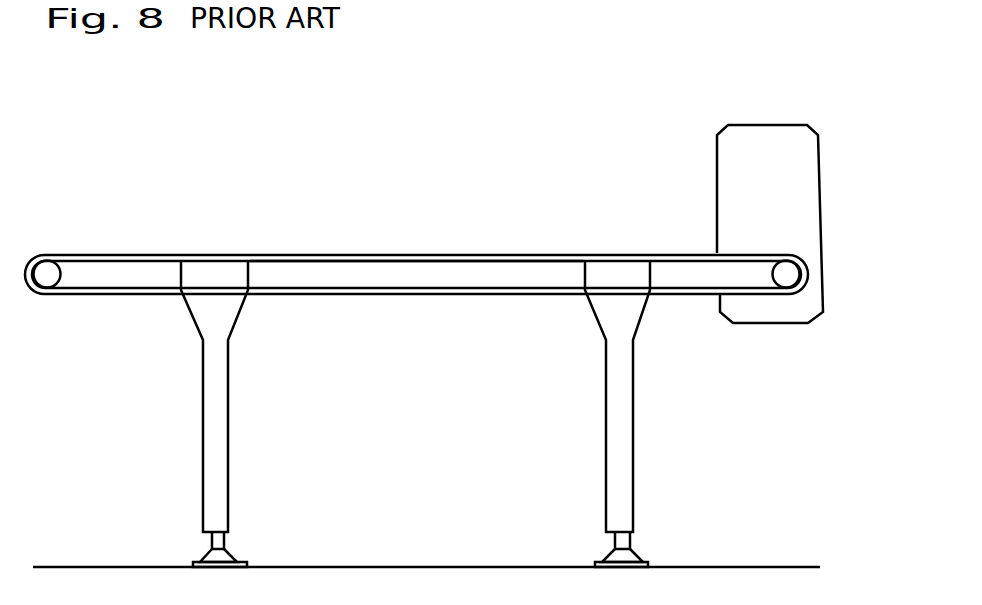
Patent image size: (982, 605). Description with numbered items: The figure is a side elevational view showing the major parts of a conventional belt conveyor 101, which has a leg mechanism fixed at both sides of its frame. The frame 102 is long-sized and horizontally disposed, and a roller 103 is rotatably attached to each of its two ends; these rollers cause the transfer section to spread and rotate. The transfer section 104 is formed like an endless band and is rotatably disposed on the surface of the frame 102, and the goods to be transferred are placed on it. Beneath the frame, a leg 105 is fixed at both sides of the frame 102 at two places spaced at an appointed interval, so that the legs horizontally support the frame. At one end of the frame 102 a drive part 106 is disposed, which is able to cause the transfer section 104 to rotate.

The conventional conveyor 101 is at (521, 183).
The frame 102 is at (380, 270).
The roller 103 is at (47, 280).
The transfer section 104 is at (145, 255).
The leg 105 is at (212, 477).
The drive part 106 is at (800, 208).